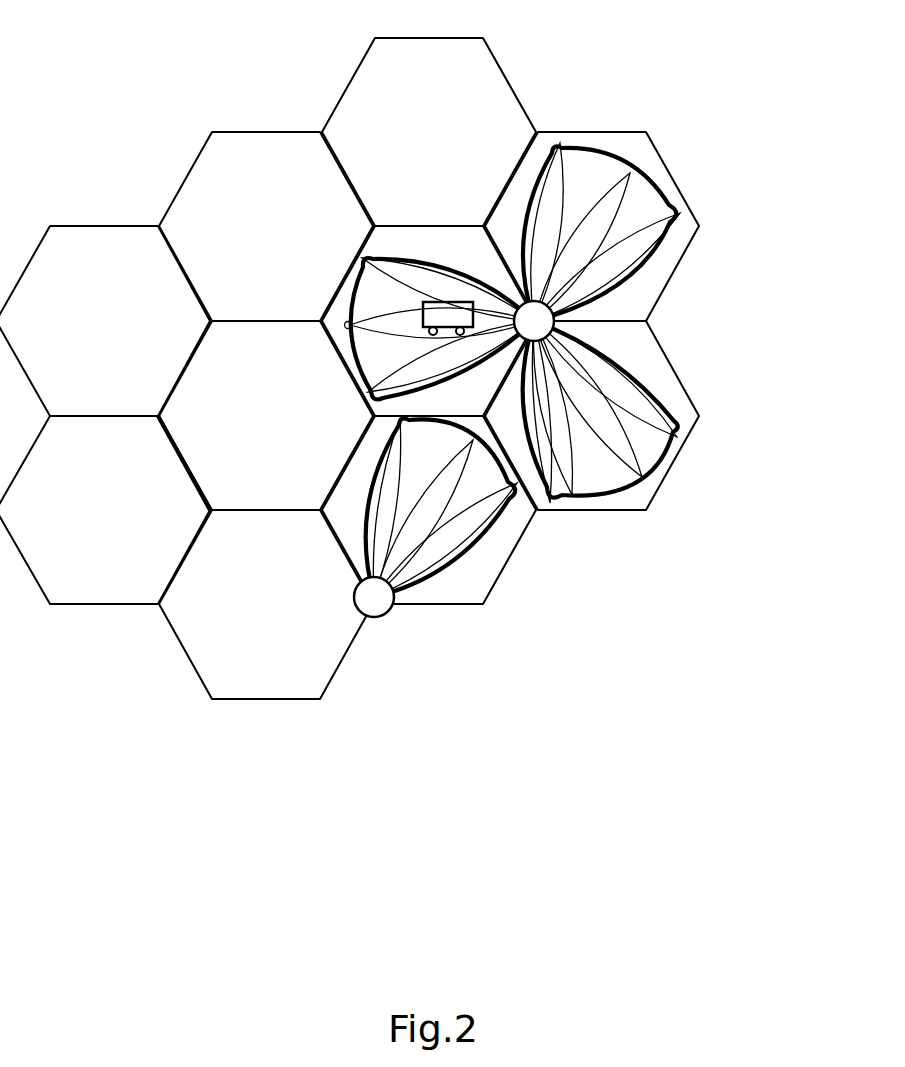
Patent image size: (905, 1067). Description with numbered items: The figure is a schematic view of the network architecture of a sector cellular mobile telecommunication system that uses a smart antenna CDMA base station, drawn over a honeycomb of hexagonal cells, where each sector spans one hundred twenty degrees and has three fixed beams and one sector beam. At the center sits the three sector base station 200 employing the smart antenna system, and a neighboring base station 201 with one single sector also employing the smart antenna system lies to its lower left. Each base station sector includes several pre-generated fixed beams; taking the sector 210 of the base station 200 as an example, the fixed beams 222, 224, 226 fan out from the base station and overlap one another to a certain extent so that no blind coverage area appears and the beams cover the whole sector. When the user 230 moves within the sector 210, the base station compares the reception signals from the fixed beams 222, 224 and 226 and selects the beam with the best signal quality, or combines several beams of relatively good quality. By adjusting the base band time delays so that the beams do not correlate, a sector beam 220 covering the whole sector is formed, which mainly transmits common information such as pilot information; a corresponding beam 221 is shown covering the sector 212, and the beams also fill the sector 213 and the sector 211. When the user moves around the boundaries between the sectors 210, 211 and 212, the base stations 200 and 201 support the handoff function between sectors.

The three sector base station 200 is at (554, 327).
The neighboring base station 201 is at (381, 616).
The sector 210 is at (432, 245).
The sector 211 is at (473, 570).
The sector 212 is at (640, 502).
The fourth cell 213 is at (638, 152).
The sector beam 220 is at (473, 272).
The beam of third cell 221 is at (662, 467).
The fixed beam 222 is at (393, 268).
The fixed beam 224 is at (373, 327).
The fixed beam 226 is at (380, 387).
The user 230 is at (427, 312).